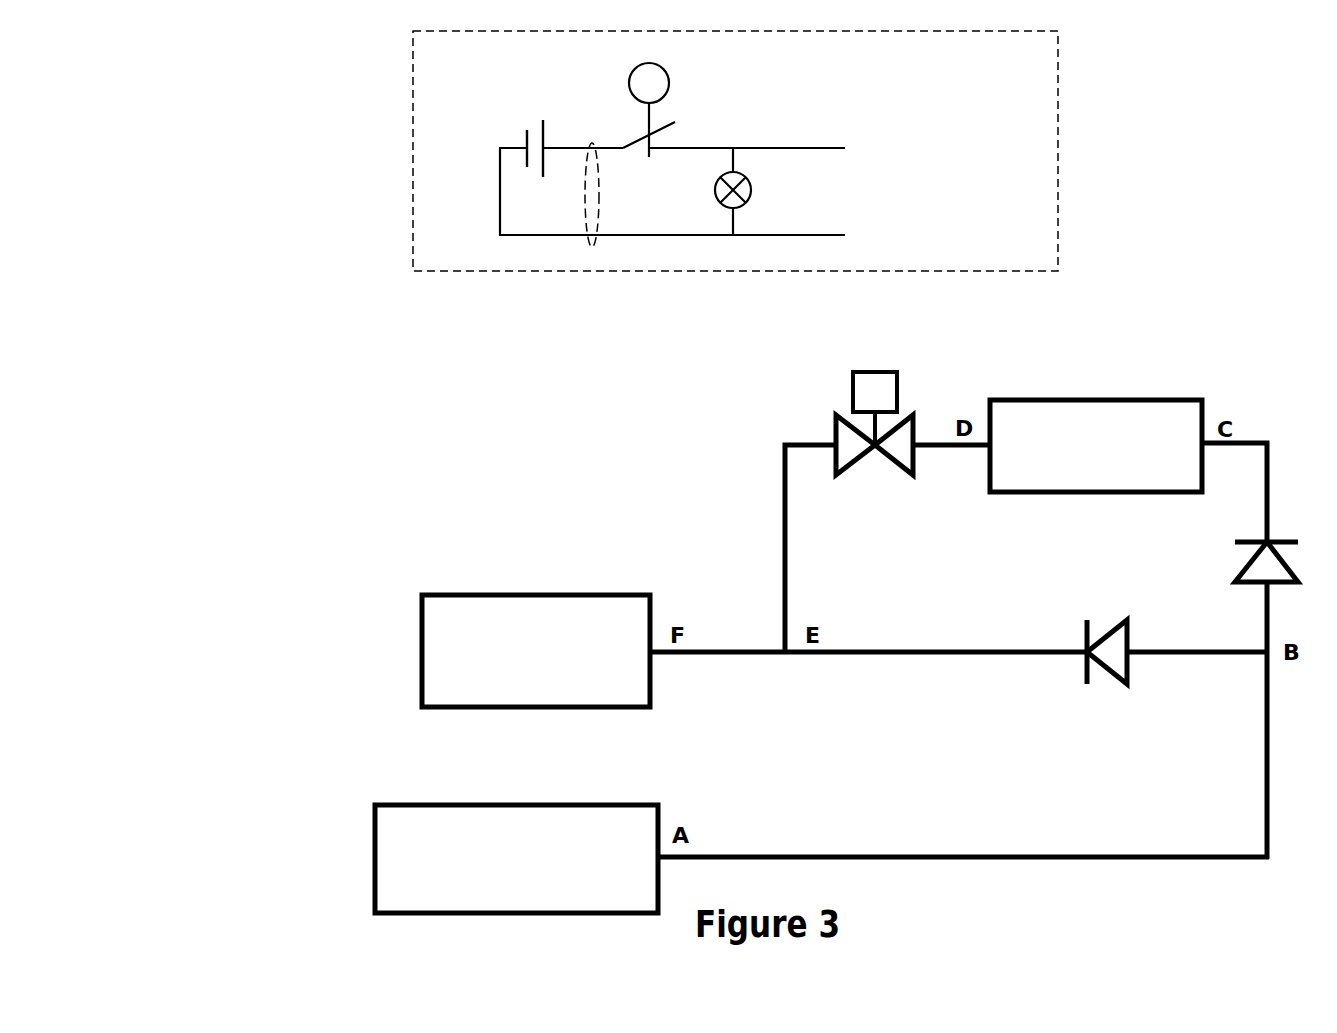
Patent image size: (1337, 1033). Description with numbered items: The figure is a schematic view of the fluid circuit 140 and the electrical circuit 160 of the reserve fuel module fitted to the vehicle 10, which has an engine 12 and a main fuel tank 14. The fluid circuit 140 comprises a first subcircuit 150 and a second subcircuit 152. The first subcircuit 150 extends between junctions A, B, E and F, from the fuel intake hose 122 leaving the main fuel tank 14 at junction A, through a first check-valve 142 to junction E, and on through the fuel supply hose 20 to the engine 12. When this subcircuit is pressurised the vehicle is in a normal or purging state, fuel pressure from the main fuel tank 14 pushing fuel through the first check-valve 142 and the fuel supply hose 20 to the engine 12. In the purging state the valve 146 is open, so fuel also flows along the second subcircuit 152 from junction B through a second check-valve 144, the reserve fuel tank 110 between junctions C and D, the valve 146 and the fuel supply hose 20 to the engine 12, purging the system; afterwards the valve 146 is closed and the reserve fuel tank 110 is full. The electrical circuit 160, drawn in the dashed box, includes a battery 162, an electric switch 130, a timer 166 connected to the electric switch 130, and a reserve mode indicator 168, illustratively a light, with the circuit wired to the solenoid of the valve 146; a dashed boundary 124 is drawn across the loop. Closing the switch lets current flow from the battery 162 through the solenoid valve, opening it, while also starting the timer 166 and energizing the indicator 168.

The vehicle 10 is at (258, 335).
The engine 12 is at (512, 595).
The main fuel tank 14 is at (418, 805).
The fuel supply hose 20 is at (742, 649).
The reserve fuel tank 110 is at (1113, 450).
The fuel intake hose 122 is at (758, 855).
The coupling 124 is at (600, 191).
The electric switch 130 is at (636, 141).
The fluid circuit 140 is at (380, 459).
The first check-valve 142 is at (1107, 640).
The second check-valve 144 is at (1238, 572).
The valve 146 is at (832, 440).
The first subcircuit 150 is at (1035, 766).
The second subcircuit 152 is at (940, 559).
The electrical circuit 160 is at (400, 207).
The battery 162 is at (523, 147).
The timer 166 is at (670, 80).
The reserve mode indicator 168 is at (752, 190).